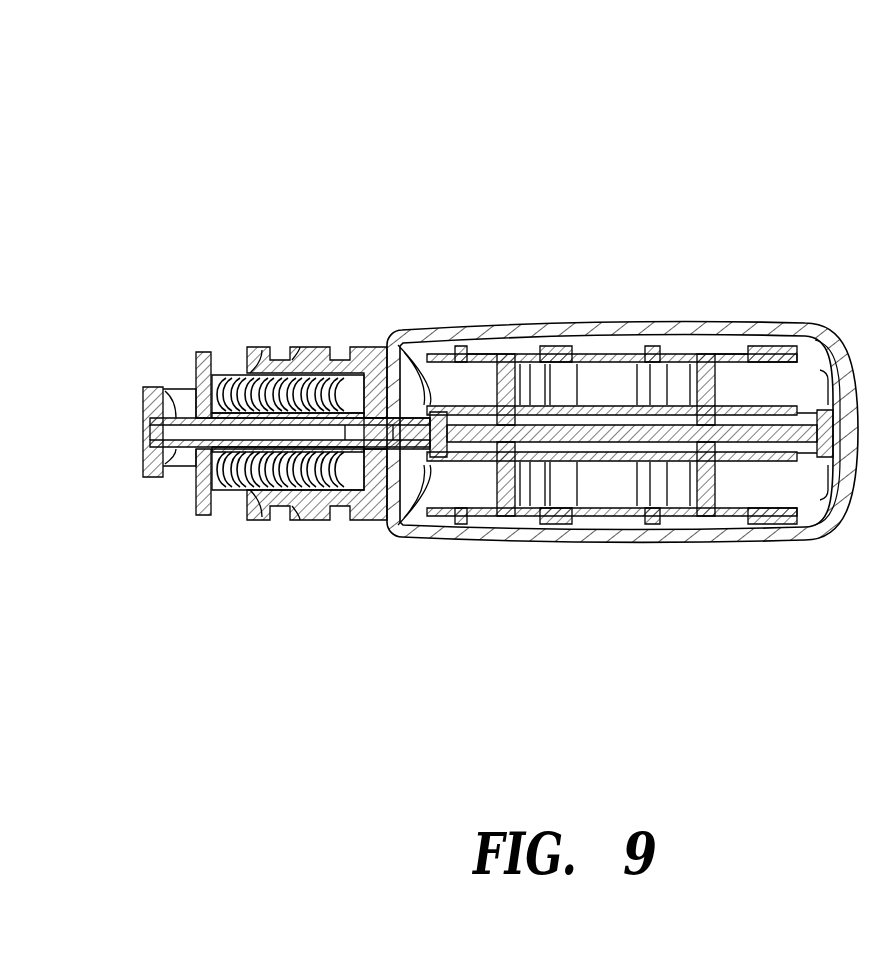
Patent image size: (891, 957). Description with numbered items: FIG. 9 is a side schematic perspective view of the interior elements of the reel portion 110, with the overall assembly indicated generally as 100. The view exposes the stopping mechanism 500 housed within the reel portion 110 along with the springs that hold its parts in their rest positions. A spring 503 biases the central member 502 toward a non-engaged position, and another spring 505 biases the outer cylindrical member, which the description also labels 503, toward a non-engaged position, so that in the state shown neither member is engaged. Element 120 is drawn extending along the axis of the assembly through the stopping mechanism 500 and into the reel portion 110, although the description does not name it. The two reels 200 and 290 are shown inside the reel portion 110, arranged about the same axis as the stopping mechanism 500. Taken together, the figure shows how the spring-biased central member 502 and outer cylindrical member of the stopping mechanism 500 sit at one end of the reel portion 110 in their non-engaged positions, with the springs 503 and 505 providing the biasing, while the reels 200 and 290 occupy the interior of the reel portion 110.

The handpiece assembly 100 is at (148, 122).
The reel portion 110 is at (793, 312).
The actuator rod 120 is at (188, 348).
The reel 200 is at (600, 383).
The reel 290 is at (590, 485).
The stopping mechanism 500 is at (323, 335).
The central member 502 is at (143, 410).
The spring 503 is at (237, 352).
The spring 505 is at (243, 483).